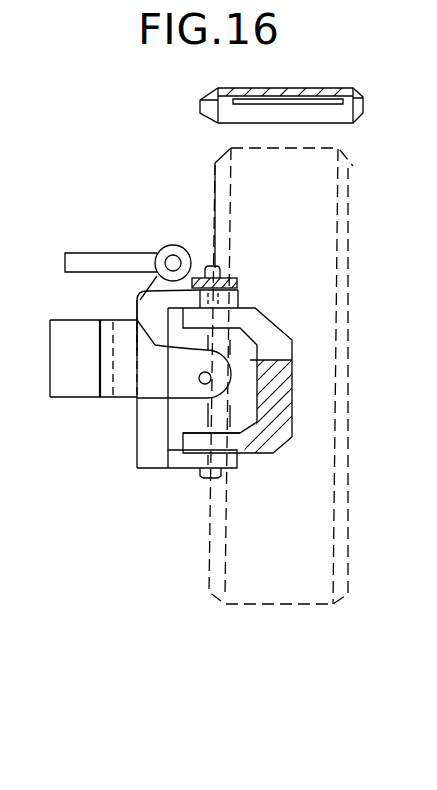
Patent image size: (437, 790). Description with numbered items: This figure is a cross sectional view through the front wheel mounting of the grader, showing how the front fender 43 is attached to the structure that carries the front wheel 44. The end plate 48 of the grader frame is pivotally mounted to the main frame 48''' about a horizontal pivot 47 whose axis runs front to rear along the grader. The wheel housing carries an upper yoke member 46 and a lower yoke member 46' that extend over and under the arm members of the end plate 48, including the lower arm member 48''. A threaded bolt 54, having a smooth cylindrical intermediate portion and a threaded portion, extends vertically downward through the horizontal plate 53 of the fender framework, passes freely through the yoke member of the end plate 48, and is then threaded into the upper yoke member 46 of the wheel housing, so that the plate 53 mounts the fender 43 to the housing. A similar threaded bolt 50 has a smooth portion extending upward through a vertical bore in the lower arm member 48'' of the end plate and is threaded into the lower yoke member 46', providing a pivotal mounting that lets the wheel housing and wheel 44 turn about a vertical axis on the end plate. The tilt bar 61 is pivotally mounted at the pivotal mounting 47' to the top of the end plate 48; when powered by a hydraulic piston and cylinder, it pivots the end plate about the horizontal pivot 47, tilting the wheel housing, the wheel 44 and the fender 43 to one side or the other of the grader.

The front fender 43 is at (0, 208).
The front wheel 44 is at (372, 462).
The upper yoke member 46 is at (254, 375).
The lower yoke member 46' is at (194, 484).
The horizontal pivot 47 is at (183, 382).
The pivotal mounting of tilt bar 47' is at (152, 238).
The end plate 48 is at (160, 376).
The lower arm member of end plate 48'' is at (113, 399).
The main frame 48''' is at (115, 359).
The threaded bolt 50 is at (217, 480).
The horizontal plate 53 is at (240, 282).
The threaded bolt 54 is at (211, 266).
The tilt bar 61 is at (94, 262).